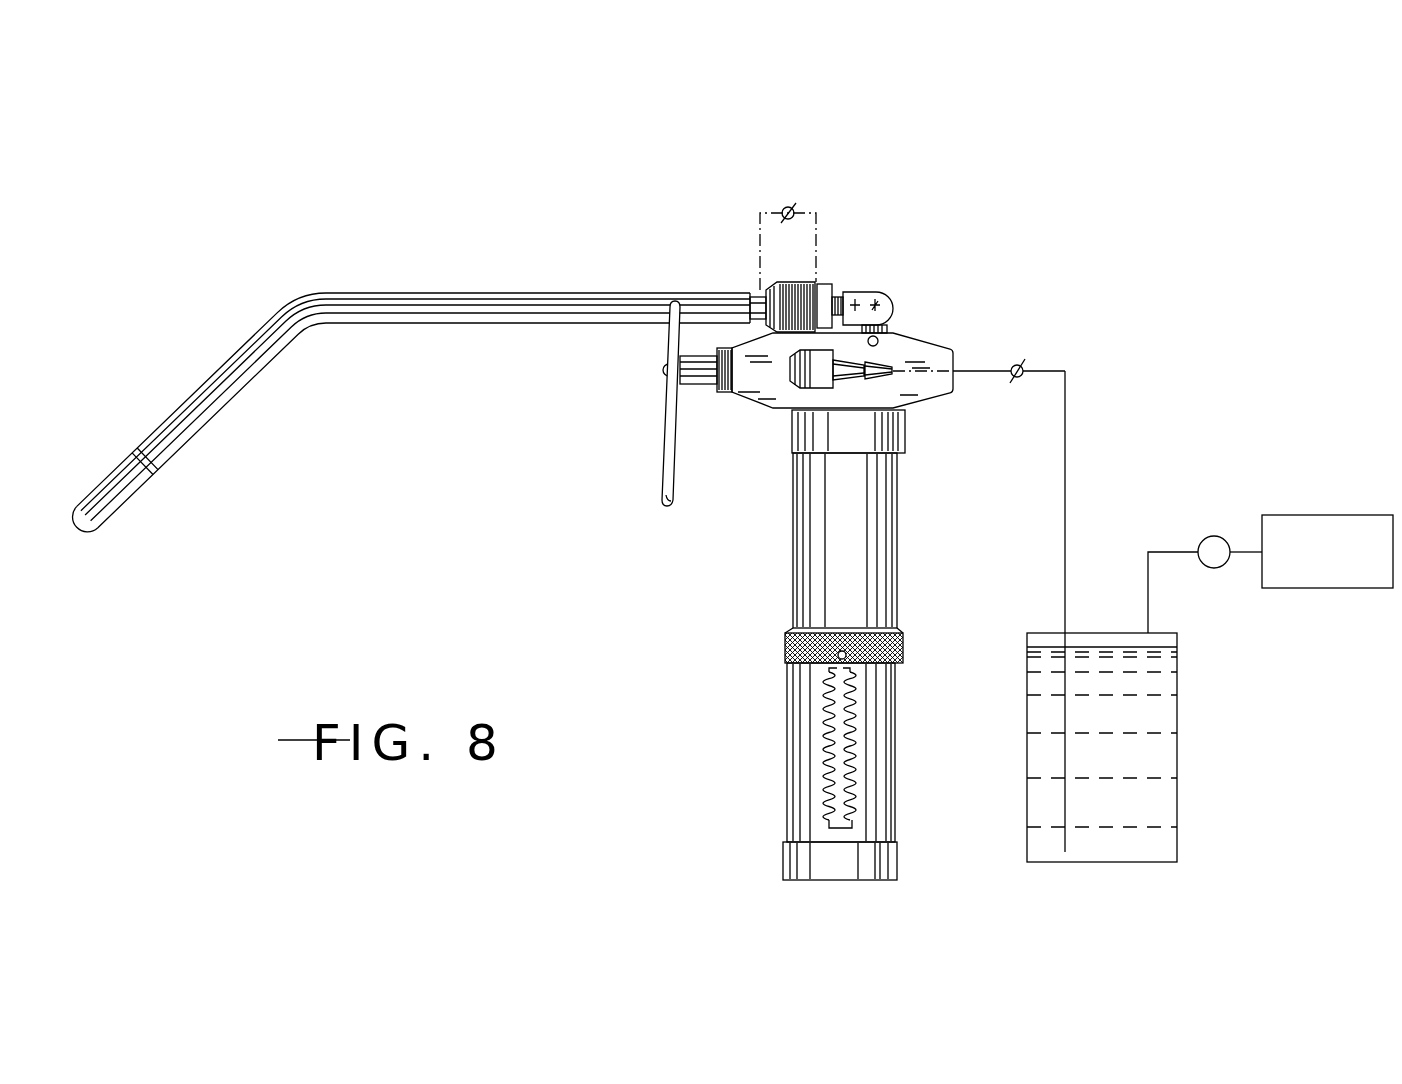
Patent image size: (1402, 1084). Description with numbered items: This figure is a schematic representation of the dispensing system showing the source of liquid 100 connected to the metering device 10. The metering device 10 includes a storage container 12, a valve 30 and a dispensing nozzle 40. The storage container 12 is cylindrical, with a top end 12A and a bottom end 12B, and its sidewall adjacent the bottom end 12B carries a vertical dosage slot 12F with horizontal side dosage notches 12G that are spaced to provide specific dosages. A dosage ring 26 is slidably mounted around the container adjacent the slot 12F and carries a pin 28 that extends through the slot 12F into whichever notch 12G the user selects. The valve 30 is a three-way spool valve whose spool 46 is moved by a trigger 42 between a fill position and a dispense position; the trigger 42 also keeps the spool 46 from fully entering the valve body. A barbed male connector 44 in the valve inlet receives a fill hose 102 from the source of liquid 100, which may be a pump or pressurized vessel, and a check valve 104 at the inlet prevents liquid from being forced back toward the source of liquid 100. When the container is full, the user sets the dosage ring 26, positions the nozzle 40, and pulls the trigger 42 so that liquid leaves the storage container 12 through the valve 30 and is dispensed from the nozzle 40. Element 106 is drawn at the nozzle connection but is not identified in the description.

The metering device 10 is at (728, 557).
The storage container 12 is at (888, 576).
The top end 12A is at (906, 430).
The bottom end 12B is at (898, 866).
The vertical dosage slot 12F is at (842, 772).
The horizontal side dosage notches 12G is at (856, 808).
The dosage ring 26 is at (904, 660).
The pin 28 is at (846, 652).
The valve 30 is at (887, 296).
The dispensing nozzle 40 is at (393, 292).
The trigger 42 is at (661, 474).
The barbed male connector 44 is at (793, 389).
The spool 46 is at (697, 386).
The source of liquid 100 is at (1205, 675).
The fill hose 102 is at (1066, 450).
The check valve 104 is at (1020, 366).
The connector 106 is at (799, 208).